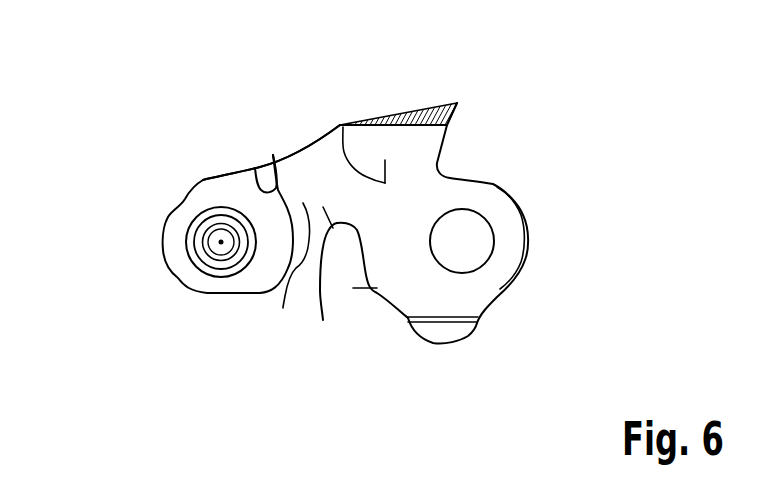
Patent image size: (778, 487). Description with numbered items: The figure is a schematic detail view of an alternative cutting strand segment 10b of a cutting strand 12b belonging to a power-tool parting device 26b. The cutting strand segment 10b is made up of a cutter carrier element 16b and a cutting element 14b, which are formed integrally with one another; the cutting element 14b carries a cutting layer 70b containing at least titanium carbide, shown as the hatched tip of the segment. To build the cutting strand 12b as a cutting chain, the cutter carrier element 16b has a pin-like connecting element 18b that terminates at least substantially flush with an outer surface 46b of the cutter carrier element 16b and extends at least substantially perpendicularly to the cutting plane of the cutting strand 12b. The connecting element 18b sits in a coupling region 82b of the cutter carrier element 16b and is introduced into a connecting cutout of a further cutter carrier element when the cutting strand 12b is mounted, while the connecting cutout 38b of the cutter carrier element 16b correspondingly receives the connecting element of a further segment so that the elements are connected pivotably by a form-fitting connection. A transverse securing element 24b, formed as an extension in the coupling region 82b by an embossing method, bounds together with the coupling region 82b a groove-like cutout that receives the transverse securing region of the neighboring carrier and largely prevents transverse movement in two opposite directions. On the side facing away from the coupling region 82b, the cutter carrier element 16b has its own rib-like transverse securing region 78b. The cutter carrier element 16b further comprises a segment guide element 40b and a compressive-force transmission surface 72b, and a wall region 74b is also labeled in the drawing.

The cutting strand 12b is at (95, 68).
The coupling region 82b is at (218, 150).
The transverse securing element 24b is at (261, 186).
The outer surface 46b is at (343, 127).
The cutting element 14b is at (360, 122).
The cutting layer 70b is at (443, 105).
The power-tool parting device 26b is at (637, 87).
The connecting cutout 38b is at (463, 222).
The transverse securing region 78b is at (528, 217).
The segment guide element 40b is at (458, 331).
The connecting element 18b is at (212, 260).
The cutter carrier element 16b is at (286, 268).
The cutting strand segment 10b is at (323, 320).
The wall 74b is at (377, 292).
The compressive-force transmission surface 72b is at (441, 355).